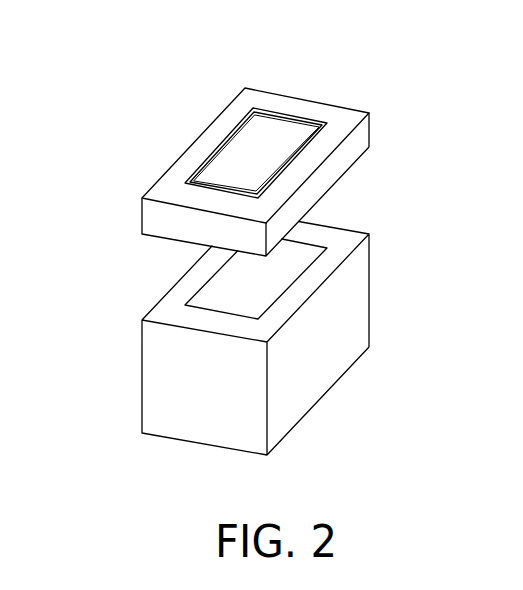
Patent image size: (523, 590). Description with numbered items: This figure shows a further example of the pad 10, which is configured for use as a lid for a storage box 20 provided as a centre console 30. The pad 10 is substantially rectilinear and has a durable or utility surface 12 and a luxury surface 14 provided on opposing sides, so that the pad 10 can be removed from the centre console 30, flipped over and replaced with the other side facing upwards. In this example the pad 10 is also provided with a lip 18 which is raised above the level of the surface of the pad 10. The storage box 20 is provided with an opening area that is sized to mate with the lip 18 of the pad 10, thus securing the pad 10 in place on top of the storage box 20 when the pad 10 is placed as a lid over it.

The centre console 30 is at (120, 92).
The pad 10 is at (288, 103).
The utility surface 12 is at (163, 240).
The luxury surface 14 is at (173, 180).
The lip 18 is at (313, 125).
The storage box 20 is at (333, 360).